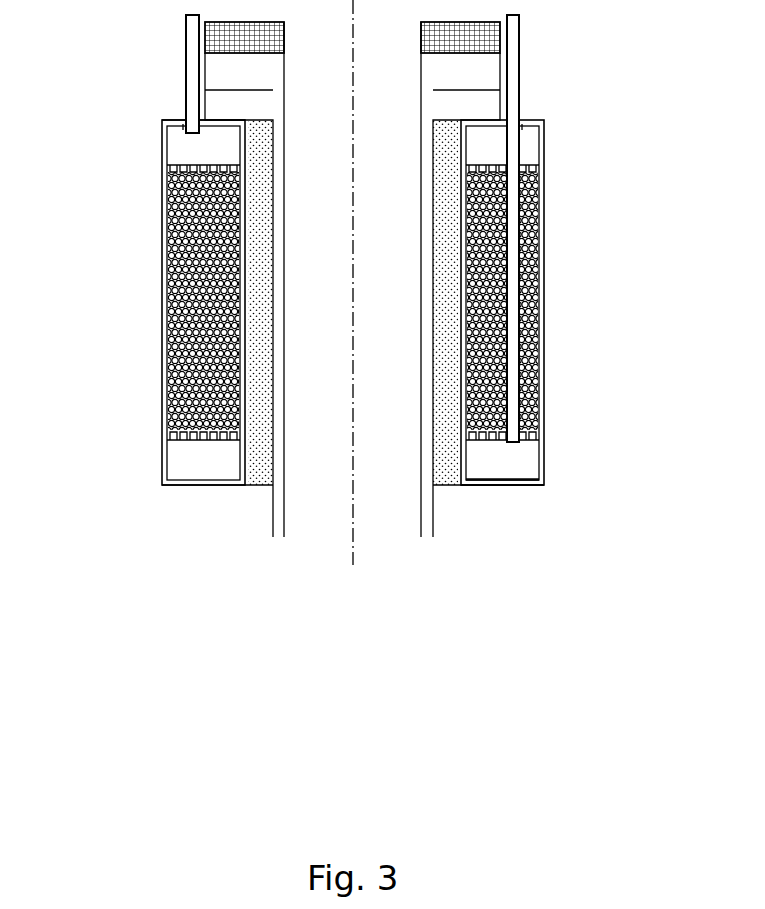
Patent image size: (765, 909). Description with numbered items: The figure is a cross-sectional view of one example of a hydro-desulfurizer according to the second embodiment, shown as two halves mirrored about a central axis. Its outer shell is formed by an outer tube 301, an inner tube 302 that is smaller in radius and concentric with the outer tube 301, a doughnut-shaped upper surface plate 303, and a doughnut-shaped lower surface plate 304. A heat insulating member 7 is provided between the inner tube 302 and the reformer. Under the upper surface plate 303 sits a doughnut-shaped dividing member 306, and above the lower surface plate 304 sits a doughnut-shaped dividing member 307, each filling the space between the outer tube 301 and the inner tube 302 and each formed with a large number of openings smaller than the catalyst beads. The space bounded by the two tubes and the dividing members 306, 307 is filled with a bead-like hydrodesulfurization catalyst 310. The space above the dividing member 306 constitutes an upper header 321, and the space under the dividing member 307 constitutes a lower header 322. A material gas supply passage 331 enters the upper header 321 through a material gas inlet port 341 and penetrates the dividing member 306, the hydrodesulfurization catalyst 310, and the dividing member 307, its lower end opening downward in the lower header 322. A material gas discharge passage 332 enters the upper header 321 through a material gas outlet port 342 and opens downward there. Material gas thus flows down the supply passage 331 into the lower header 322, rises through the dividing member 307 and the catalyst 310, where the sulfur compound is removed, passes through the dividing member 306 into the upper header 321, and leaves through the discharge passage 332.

The heat insulating member 7 is at (260, 487).
The outer tube 301 is at (545, 292).
The inner tube 302 is at (463, 448).
The upper surface plate 303 is at (177, 119).
The lower surface plate 304 is at (197, 485).
The dividing member 306 is at (205, 167).
The dividing member 307 is at (205, 437).
The hydrodesulfurization catalyst 310 is at (175, 322).
The upper header 321 is at (525, 143).
The lower header 322 is at (518, 455).
The material gas supply passage 331 is at (520, 57).
The material gas discharge passage 332 is at (187, 47).
The material gas inlet port 341 is at (531, 106).
The material gas outlet port 342 is at (182, 109).